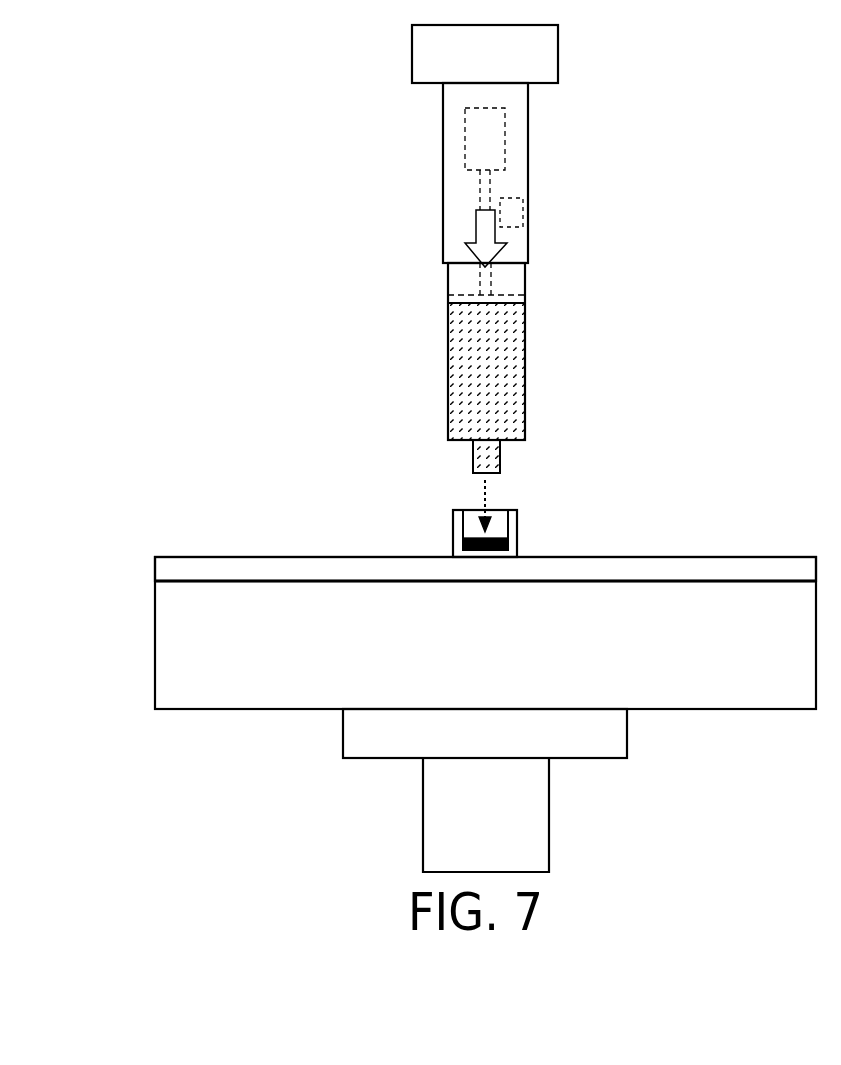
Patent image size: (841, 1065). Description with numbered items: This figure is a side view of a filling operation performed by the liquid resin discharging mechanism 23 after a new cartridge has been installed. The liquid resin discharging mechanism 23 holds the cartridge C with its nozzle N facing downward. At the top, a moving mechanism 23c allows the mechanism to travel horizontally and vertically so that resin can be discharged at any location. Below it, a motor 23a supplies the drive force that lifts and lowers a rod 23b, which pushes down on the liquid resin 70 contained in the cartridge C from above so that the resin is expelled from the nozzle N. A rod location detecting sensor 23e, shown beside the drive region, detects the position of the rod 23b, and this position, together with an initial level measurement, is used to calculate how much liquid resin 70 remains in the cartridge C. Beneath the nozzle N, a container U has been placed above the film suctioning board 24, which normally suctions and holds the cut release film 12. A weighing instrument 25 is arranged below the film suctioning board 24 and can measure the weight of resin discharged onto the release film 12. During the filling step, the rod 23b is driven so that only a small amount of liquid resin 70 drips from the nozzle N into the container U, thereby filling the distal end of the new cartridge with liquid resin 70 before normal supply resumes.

The liquid resin discharging mechanism 23 is at (369, 230).
The motor 23a is at (463, 132).
The rod 23b is at (495, 275).
The moving mechanism 23c is at (412, 55).
The rod location detecting sensor 23e is at (523, 205).
The liquid resin 70 is at (525, 377).
The cartridge C is at (448, 318).
The nozzle N is at (473, 457).
The container U is at (453, 532).
The release film 12 is at (155, 570).
The film suctioning board 24 is at (155, 655).
The weighing instrument 25 is at (627, 735).